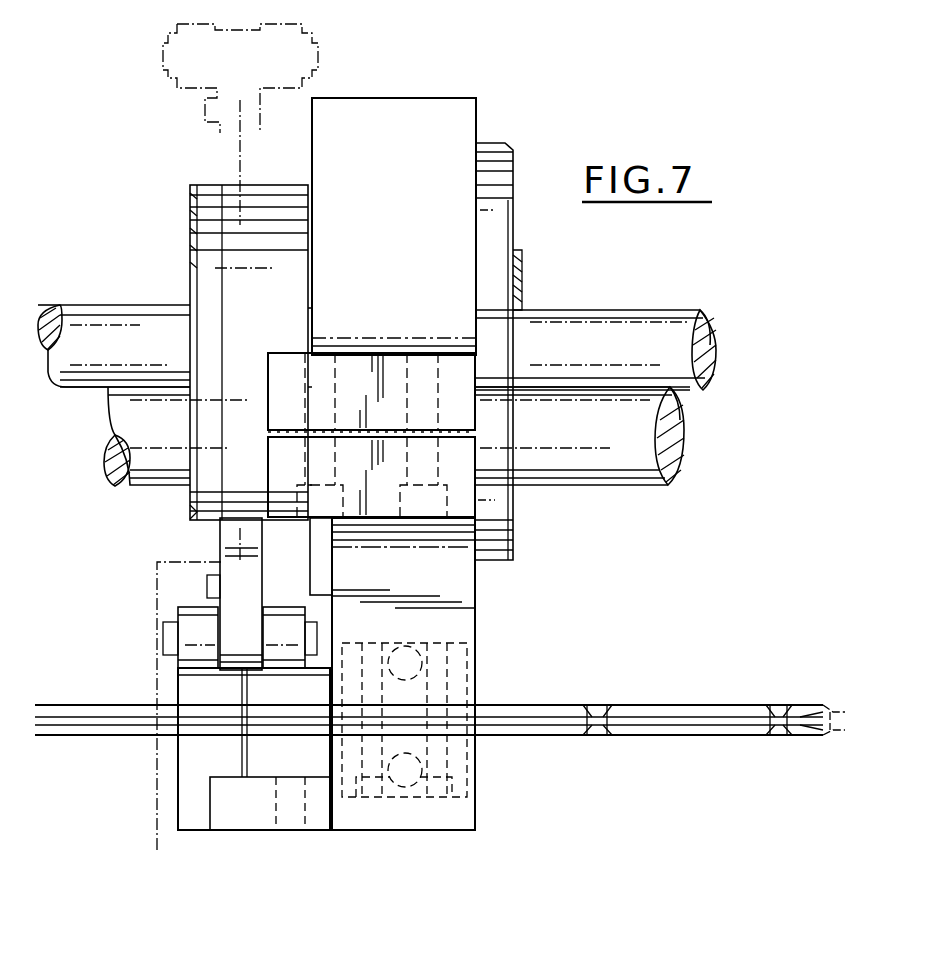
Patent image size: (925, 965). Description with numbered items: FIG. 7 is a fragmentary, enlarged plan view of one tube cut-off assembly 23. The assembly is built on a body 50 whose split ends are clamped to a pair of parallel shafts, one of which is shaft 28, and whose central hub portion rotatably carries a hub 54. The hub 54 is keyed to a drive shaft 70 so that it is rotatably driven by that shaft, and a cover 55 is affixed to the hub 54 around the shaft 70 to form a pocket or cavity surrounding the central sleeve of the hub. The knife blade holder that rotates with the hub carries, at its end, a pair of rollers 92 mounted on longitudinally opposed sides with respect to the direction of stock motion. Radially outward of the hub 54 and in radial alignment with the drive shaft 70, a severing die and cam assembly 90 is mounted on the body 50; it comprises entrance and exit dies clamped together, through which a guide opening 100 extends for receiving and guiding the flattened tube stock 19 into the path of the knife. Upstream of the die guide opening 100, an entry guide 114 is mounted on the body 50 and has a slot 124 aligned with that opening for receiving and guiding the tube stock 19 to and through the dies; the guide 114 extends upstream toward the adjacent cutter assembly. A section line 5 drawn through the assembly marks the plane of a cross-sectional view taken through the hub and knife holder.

The section line 5- 5 is at (236, 127).
The body 50 is at (482, 131).
The hub 54 is at (266, 198).
The cover 55 is at (205, 262).
The drive shaft 70 is at (641, 322).
The shaft 28 is at (631, 478).
The cut-off assembly 23 is at (503, 585).
The rollers 92 is at (192, 612).
The severing die and cam assembly 90 is at (190, 752).
The guide opening 100 is at (192, 722).
The entry guide 114 is at (645, 705).
The slot 124 is at (710, 720).
The tube stock 19 is at (835, 738).